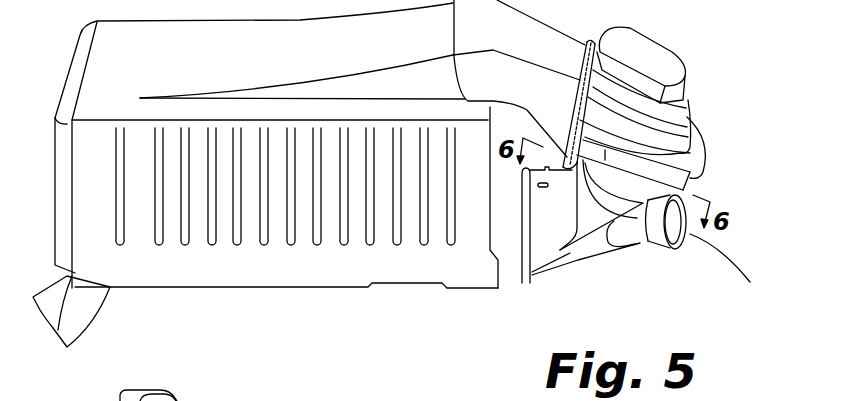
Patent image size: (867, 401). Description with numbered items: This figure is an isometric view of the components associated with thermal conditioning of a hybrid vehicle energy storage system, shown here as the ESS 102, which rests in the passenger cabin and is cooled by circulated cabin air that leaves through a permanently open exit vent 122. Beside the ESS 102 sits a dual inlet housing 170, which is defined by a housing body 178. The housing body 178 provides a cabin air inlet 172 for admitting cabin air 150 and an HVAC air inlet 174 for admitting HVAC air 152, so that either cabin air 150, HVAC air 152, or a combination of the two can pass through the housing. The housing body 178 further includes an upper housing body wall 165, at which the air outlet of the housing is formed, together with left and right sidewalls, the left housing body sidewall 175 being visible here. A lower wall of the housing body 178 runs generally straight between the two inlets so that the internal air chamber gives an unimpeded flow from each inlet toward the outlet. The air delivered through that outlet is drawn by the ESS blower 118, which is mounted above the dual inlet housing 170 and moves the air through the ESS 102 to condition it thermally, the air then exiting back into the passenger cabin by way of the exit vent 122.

The ESS 102 is at (258, 287).
The ESS blower 118 is at (670, 48).
The exit vent 122 is at (110, 287).
The cabin air 150 is at (518, 270).
The HVAC air 152 is at (718, 245).
The upper housing body wall 165 is at (348, 393).
The dual inlet housing 170 is at (605, 265).
The cabin air inlet 172 is at (520, 284).
The HVAC air inlet 174 is at (670, 229).
The left housing body sidewall 175 is at (289, 400).
The housing body 178 is at (583, 268).